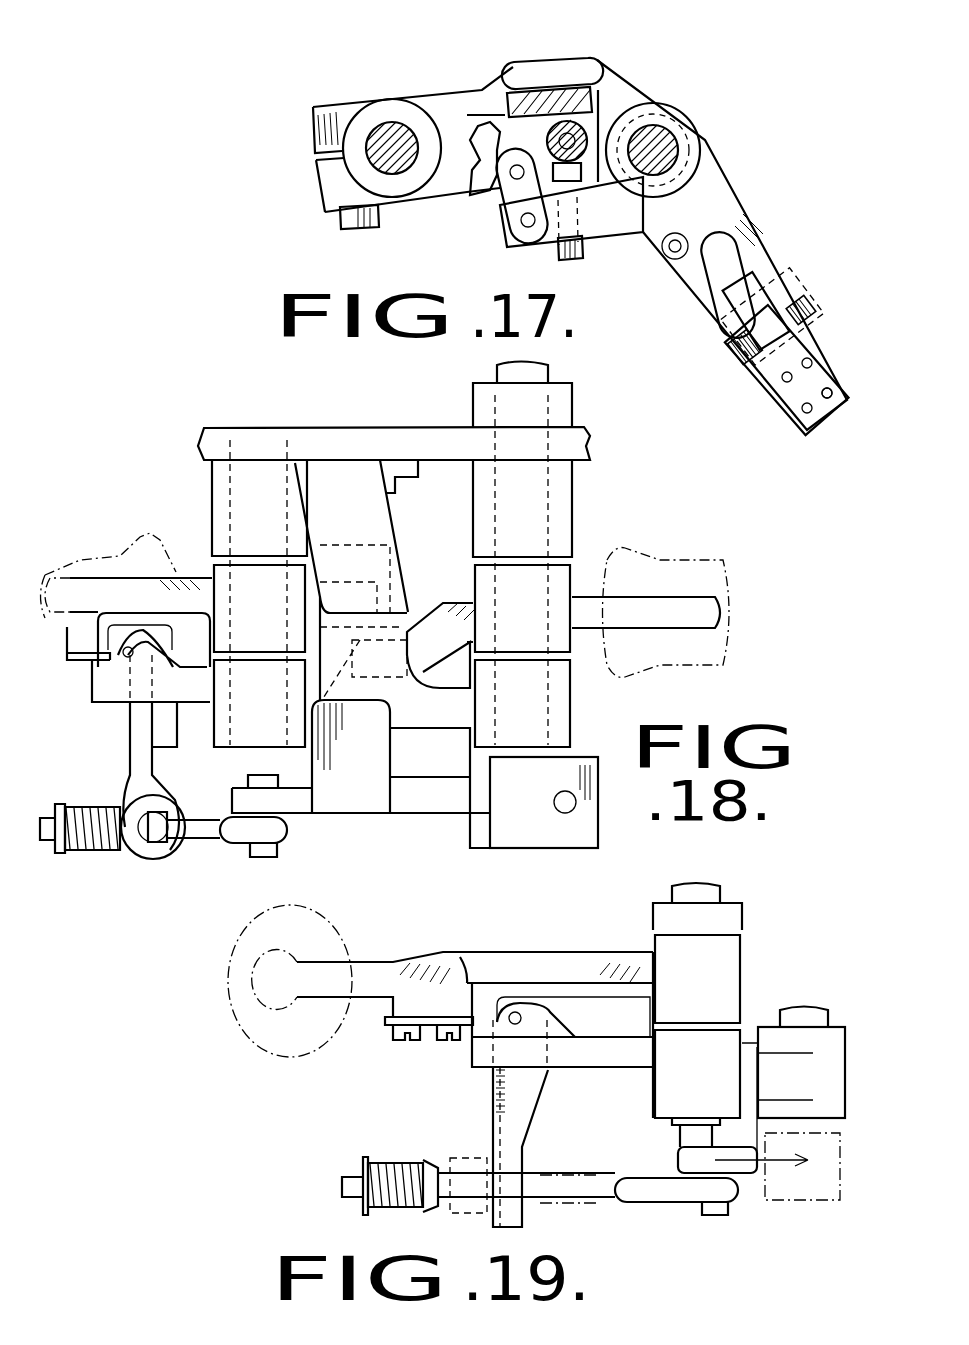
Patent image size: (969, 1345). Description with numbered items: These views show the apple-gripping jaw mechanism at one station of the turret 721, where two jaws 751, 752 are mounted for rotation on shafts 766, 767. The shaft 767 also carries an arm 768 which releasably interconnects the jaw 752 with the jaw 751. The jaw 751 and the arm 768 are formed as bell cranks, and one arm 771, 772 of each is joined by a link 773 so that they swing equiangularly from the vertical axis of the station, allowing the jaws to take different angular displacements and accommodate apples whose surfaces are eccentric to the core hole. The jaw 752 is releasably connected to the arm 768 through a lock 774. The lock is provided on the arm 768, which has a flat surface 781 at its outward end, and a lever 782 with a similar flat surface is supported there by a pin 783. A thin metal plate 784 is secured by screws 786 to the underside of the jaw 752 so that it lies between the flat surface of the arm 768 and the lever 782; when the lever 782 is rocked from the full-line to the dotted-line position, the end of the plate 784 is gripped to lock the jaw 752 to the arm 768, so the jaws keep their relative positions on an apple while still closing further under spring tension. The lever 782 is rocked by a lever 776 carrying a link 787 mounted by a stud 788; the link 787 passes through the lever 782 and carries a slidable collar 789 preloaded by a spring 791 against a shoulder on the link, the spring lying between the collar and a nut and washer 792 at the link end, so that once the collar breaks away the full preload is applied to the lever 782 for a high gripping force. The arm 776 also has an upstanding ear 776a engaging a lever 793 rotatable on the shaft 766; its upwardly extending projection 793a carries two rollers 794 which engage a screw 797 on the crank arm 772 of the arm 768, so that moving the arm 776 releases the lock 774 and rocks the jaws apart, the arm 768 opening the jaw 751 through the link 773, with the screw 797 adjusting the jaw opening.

In FIG. 18, the turret 721 is at (588, 491).
In FIG. 18, the jaw 751 is at (645, 600).
In FIG. 18, the jaw 752 is at (150, 578).
In FIG. 19, the jaw 752 is at (515, 953).
In FIG. 17, the shaft 766 is at (380, 130).
In FIG. 18, the shaft 766 is at (483, 372).
In FIG. 19, the shaft 766 is at (805, 1005).
In FIG. 17, the shaft 767 is at (677, 160).
In FIG. 18, the shaft 767 is at (222, 483).
In FIG. 19, the shaft 767 is at (720, 896).
In FIG. 17, the arm 768 is at (733, 187).
In FIG. 18, the arm 768 is at (97, 683).
In FIG. 19, the arm 768 is at (585, 1067).
In FIG. 17, the arm 771 is at (477, 193).
In FIG. 17, the crank arm 772 is at (535, 240).
In FIG. 17, the link 773 is at (508, 197).
In FIG. 17, the lock 774 is at (716, 371).
In FIG. 18, the lock 774 is at (135, 894).
In FIG. 19, the lock 774 is at (291, 1203).
In FIG. 17, the lever 776 is at (617, 83).
In FIG. 18, the lever 776 is at (418, 820).
In FIG. 19, the lever 776 is at (743, 1153).
In FIG. 17, the upstanding ear 776a is at (583, 62).
In FIG. 18, the upstanding ear 776a is at (370, 765).
In FIG. 17, the flat surface 781 is at (793, 300).
In FIG. 19, the flat surface 781 is at (467, 975).
In FIG. 17, the lever 782 is at (753, 273).
In FIG. 18, the lever 782 is at (130, 728).
In FIG. 19, the lever 782 is at (488, 1111).
In FIG. 19, the pin 783 is at (521, 1018).
In FIG. 17, the thin metal plate 784 is at (820, 357).
In FIG. 19, the thin metal plate 784 is at (465, 1028).
In FIG. 17, the screws 786 is at (830, 397).
In FIG. 19, the screws 786 is at (405, 1040).
In FIG. 18, the link 787 is at (195, 840).
In FIG. 19, the link 787 is at (600, 1195).
In FIG. 18, the stud 788 is at (262, 855).
In FIG. 19, the stud 788 is at (720, 1212).
In FIG. 19, the slidable collar 789 is at (432, 1160).
In FIG. 18, the spring 791 is at (88, 850).
In FIG. 19, the spring 791 is at (382, 1163).
In FIG. 18, the nut and washer 792 is at (62, 848).
In FIG. 19, the nut and washer 792 is at (345, 1178).
In FIG. 17, the lever 793 is at (450, 108).
In FIG. 18, the lever 793 is at (405, 720).
In FIG. 17, the upwardly extending projection 793a is at (492, 87).
In FIG. 18, the upwardly extending projection 793a is at (410, 640).
In FIG. 17, the rollers 794 is at (600, 112).
In FIG. 17, the screw 797 is at (587, 190).